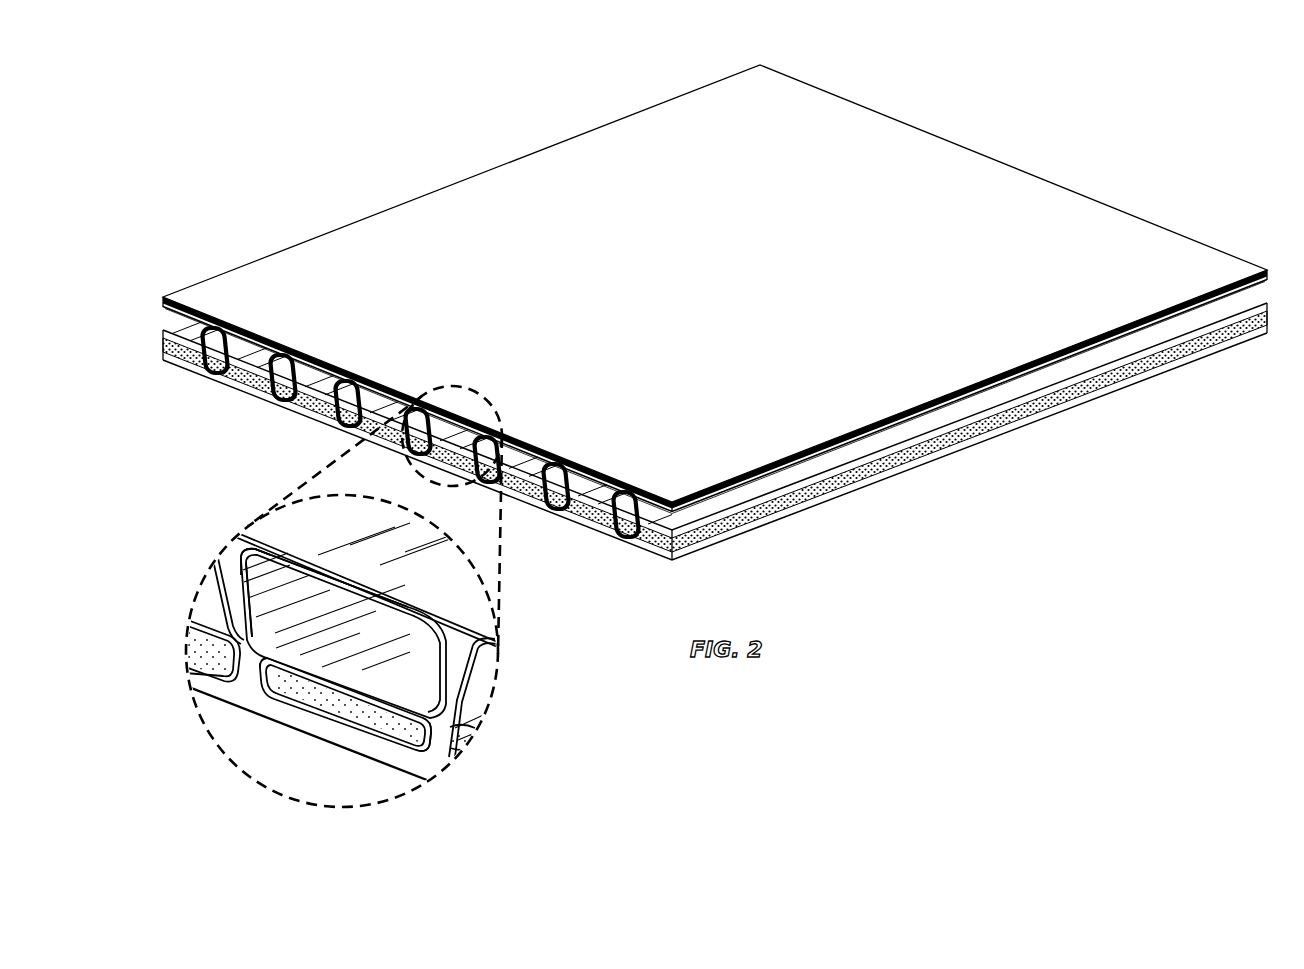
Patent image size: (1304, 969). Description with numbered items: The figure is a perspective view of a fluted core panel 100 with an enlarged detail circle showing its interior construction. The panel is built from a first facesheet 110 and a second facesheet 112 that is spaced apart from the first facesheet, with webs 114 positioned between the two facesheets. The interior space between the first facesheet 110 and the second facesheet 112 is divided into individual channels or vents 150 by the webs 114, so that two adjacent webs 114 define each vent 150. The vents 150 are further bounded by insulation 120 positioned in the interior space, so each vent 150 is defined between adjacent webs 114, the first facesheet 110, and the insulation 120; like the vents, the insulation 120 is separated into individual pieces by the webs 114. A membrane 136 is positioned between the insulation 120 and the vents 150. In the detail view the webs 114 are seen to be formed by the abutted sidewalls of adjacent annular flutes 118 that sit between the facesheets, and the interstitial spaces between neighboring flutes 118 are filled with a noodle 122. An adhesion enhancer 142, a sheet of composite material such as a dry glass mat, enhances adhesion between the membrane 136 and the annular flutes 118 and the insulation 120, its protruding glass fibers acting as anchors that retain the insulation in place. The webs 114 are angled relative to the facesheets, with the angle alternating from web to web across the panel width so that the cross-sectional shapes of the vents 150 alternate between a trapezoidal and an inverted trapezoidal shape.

The fluted core panel 100 is at (1000, 91).
The first facesheet 110 is at (824, 130).
The second facesheet 112 is at (203, 386).
The webs 114 is at (200, 332).
The annular flutes 118 is at (280, 404).
The insulation 120 is at (398, 734).
The noodle 122 is at (234, 545).
The membrane 136 is at (283, 567).
The adhesion enhancer 142 is at (343, 727).
The vents 150 is at (328, 615).